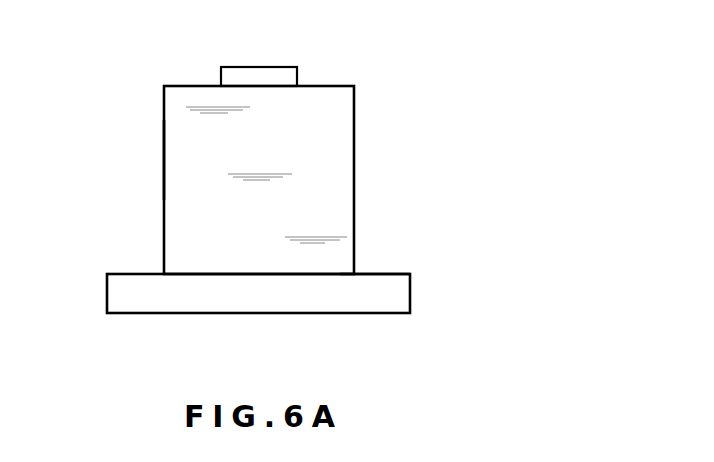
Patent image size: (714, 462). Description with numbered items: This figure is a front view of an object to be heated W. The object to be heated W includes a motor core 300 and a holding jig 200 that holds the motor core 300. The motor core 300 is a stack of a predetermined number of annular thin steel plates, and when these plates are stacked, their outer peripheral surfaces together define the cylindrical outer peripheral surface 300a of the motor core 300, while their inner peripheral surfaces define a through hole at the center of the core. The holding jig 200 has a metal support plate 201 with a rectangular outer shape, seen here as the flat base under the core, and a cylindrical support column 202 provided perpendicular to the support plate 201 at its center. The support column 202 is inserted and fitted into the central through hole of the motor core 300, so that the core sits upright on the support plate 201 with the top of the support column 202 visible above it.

The motor core 300 is at (357, 103).
The cylindrical outer peripheral surface 300a is at (164, 163).
The support column 202 is at (265, 73).
The support plate 201 is at (372, 285).
The holding jig 200 is at (412, 297).
The object to be heated W is at (390, 187).